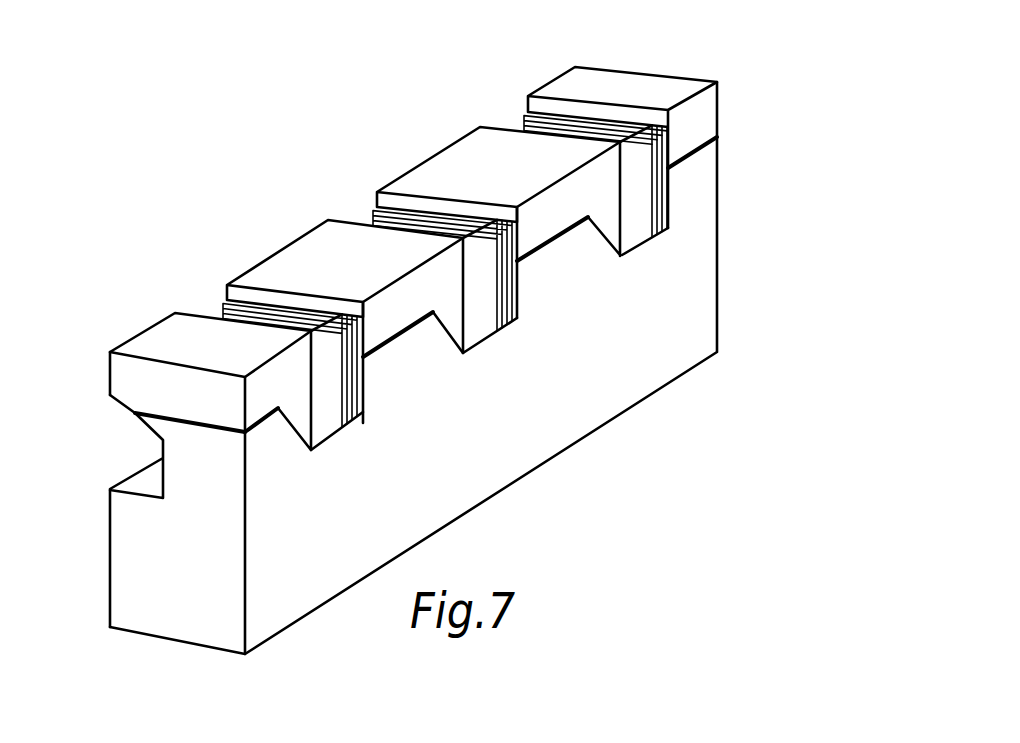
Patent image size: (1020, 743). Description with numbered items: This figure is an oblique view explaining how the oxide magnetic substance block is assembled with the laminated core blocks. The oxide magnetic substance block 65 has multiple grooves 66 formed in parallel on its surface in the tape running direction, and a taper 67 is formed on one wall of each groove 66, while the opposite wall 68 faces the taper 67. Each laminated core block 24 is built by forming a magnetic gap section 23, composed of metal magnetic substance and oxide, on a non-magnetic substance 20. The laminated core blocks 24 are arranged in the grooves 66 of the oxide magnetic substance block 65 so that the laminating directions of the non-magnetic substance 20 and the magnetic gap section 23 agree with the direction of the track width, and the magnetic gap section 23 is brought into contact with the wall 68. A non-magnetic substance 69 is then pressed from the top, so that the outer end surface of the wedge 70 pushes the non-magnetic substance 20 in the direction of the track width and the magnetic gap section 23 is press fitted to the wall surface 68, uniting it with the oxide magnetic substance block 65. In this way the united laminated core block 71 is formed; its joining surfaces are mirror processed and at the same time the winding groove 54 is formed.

The laminated core block 71 is at (665, 69).
The laminated core block 24 is at (514, 124).
The oxide magnetic substance block 65 is at (720, 236).
The magnetic gap section 23 is at (654, 238).
The non-magnetic substance 20 is at (631, 237).
The wall 68 is at (514, 286).
The groove 66 is at (480, 335).
The taper 67 is at (447, 336).
The wedge 70 is at (300, 421).
The non-magnetic substance 69 is at (258, 264).
The winding groove 54 is at (138, 482).